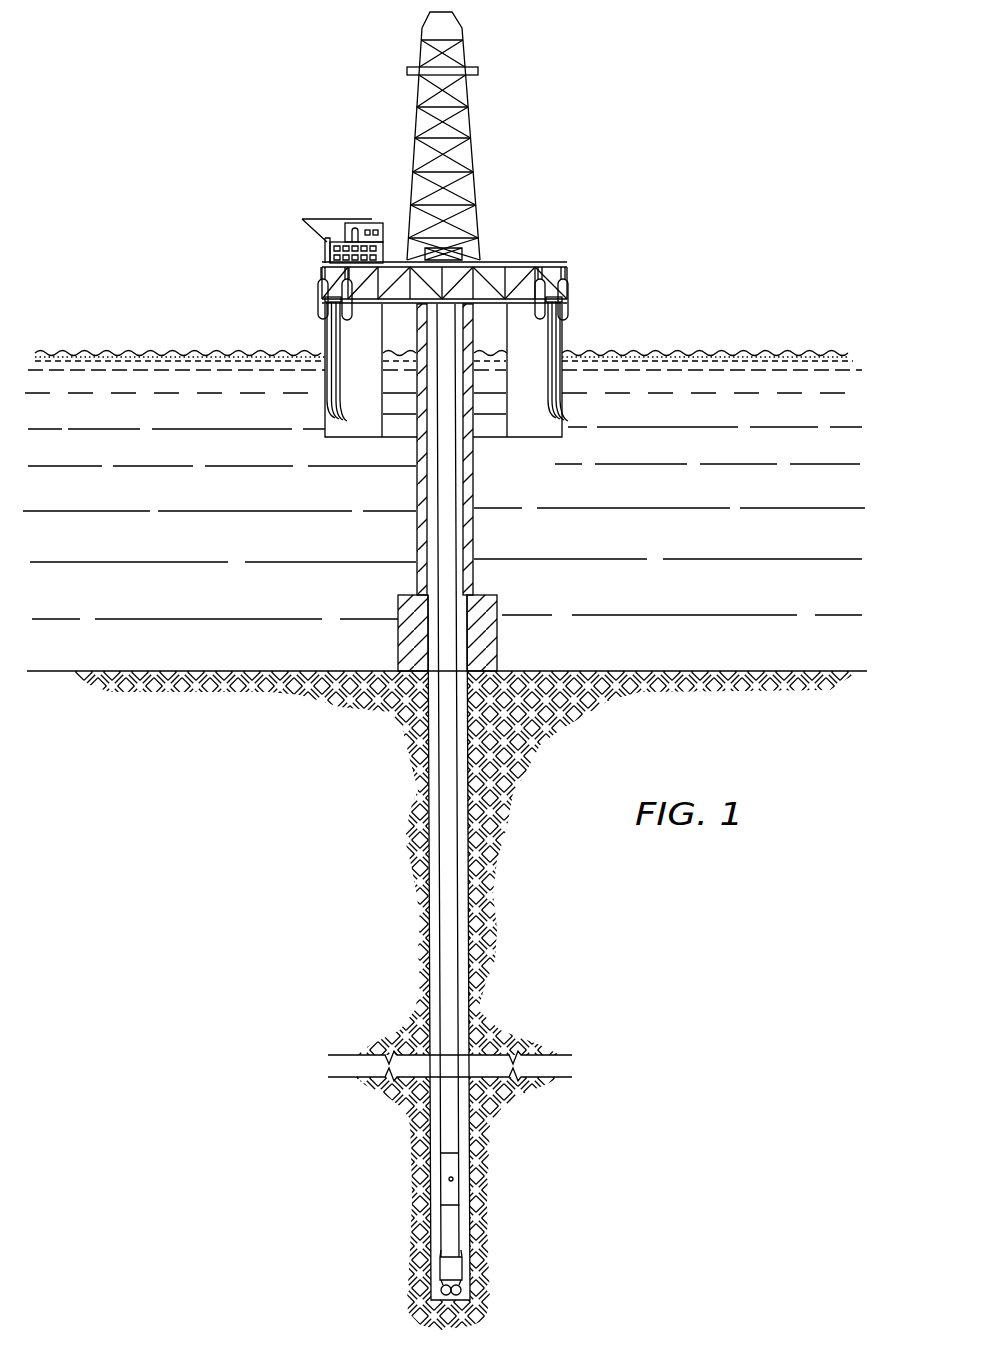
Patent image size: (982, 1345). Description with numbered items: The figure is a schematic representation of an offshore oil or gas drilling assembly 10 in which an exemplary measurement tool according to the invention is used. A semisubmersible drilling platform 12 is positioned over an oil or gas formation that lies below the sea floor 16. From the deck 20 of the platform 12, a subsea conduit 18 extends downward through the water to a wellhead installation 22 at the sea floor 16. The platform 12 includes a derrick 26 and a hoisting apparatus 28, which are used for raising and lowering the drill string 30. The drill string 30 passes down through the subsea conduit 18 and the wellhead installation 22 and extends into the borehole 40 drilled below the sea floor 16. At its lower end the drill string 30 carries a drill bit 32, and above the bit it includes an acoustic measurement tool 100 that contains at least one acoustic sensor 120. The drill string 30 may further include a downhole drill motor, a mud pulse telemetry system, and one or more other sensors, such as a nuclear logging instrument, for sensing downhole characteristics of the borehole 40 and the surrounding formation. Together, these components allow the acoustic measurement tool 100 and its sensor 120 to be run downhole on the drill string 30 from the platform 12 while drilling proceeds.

The offshore oil or gas drilling assembly 10 is at (445, 671).
The semisubmersible drilling platform 12 is at (553, 259).
The sea floor 16 is at (727, 670).
The subsea conduit 18 is at (474, 537).
The deck 20 is at (570, 297).
The wellhead installation 22 is at (497, 595).
The derrick 26 is at (447, 246).
The hoisting apparatus 28 is at (466, 54).
The drill string 30 is at (446, 453).
The drill bit 32 is at (461, 1290).
The borehole 40 is at (428, 945).
The acoustic measurement tool 100 is at (451, 1163).
The acoustic sensor 120 is at (449, 1179).